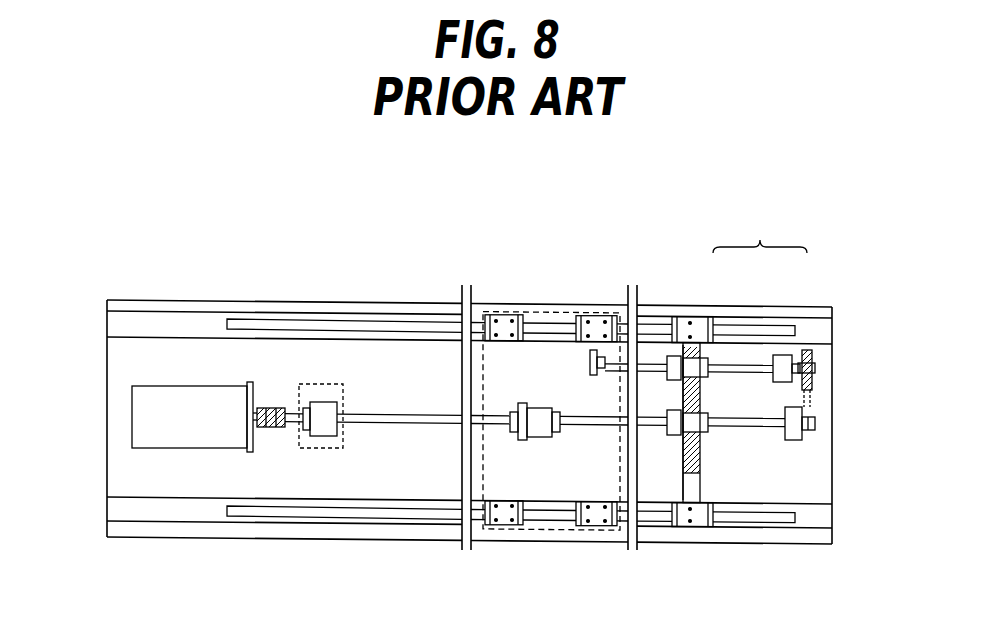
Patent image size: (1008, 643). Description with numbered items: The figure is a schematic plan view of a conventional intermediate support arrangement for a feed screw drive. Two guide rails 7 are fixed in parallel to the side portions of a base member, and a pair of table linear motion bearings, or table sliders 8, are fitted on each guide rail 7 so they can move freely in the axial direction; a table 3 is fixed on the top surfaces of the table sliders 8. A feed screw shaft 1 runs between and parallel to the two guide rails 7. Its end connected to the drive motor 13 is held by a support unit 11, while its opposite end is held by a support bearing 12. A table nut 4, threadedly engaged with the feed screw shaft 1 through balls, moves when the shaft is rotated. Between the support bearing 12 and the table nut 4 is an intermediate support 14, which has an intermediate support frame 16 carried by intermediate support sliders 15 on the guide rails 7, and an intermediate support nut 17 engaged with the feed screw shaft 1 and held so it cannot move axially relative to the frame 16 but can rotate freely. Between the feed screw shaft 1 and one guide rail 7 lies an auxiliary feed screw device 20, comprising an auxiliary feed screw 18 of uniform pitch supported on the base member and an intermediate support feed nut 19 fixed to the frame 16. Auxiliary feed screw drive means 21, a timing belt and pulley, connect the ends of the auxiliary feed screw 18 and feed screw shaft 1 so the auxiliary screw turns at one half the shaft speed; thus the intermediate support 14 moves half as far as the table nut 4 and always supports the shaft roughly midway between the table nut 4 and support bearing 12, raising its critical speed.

The feed screw shaft 1 is at (405, 423).
The table 3 is at (543, 523).
The table nut 4 is at (537, 429).
The guide rail 7 is at (390, 324).
The table linear motion bearing 8 is at (595, 320).
The support unit 11 is at (322, 428).
The support bearing 12 is at (793, 430).
The drive motor 13 is at (188, 427).
The intermediate support 14 is at (678, 468).
The intermediate support linear motion bearing 15 is at (682, 320).
The intermediate support frame 16 is at (696, 488).
The intermediate support nut 17 is at (698, 424).
The auxiliary feed screw 18 is at (743, 368).
The intermediate support feed nut 19 is at (698, 368).
The auxiliary feed screw device 20 is at (745, 228).
The auxiliary feed screw drive means 21 is at (824, 385).